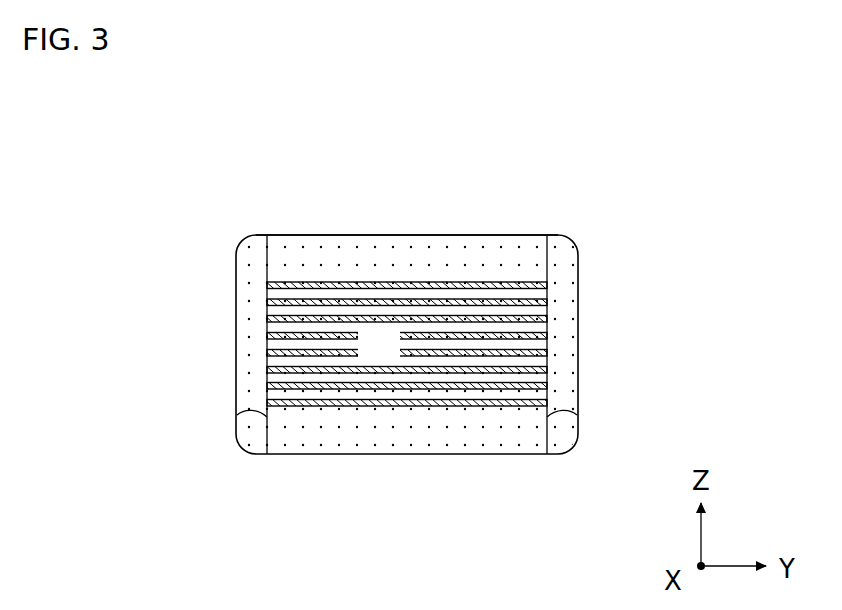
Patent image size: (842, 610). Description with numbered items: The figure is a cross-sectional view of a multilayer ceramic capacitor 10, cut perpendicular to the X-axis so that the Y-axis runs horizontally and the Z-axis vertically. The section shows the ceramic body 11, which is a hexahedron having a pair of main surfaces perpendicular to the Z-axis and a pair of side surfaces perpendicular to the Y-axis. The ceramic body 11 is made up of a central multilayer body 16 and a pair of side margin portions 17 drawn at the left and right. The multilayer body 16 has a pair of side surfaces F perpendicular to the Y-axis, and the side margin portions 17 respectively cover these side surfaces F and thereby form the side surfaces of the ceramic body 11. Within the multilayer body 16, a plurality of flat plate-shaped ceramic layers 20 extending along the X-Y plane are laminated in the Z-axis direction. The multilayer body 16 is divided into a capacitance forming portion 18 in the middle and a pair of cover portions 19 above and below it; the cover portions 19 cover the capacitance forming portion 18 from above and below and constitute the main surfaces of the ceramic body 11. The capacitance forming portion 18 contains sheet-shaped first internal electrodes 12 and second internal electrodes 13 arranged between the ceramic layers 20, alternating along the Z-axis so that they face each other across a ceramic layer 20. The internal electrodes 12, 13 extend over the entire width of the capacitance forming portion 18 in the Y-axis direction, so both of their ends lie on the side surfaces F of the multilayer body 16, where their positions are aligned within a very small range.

The multilayer ceramic capacitor 10 is at (229, 165).
The ceramic body 11 is at (551, 192).
The first internal electrodes 12 is at (282, 383).
The second internal electrodes 13 is at (455, 400).
The multilayer body 16 is at (394, 224).
The side margin portions 17 is at (256, 341).
The capacitance forming portion 18 is at (398, 357).
The cover portions 19 is at (398, 272).
The ceramic layers 20 is at (517, 294).
The side surfaces F is at (262, 417).